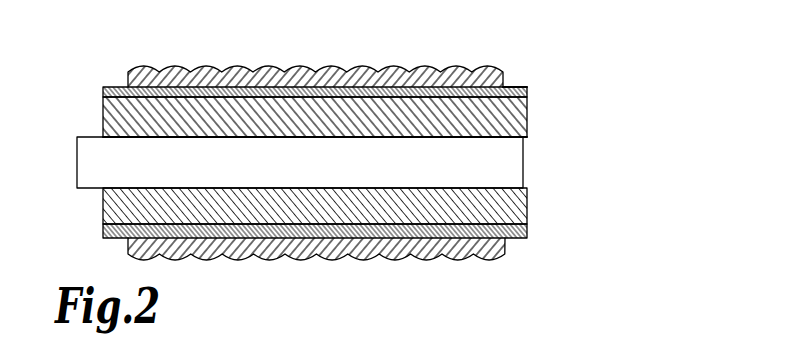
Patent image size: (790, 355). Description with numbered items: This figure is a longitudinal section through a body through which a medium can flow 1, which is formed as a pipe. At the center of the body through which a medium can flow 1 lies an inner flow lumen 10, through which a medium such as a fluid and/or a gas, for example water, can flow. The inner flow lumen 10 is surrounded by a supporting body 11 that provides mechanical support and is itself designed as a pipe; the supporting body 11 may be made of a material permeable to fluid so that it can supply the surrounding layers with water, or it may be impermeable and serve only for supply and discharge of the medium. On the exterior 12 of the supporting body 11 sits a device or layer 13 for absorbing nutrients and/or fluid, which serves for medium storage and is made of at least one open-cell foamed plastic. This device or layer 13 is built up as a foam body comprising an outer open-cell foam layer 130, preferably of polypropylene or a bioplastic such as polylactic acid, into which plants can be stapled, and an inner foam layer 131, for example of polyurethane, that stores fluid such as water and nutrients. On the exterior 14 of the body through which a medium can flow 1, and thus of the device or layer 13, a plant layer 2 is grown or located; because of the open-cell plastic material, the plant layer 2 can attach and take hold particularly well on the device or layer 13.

The body through which a medium can flow 1 is at (94, 110).
The plant layer 2 is at (284, 78).
The inner flow lumen 10 is at (505, 169).
The supporting body 11 is at (523, 137).
The exterior of the supporting body 12 is at (510, 193).
The device or layer for absorbing nutrients and/or fluid 13 is at (656, 77).
The outer open-cell foam layer 130 is at (527, 90).
The inner foam layer 131 is at (527, 120).
The exterior of the body through which a medium can flow 14 is at (515, 80).